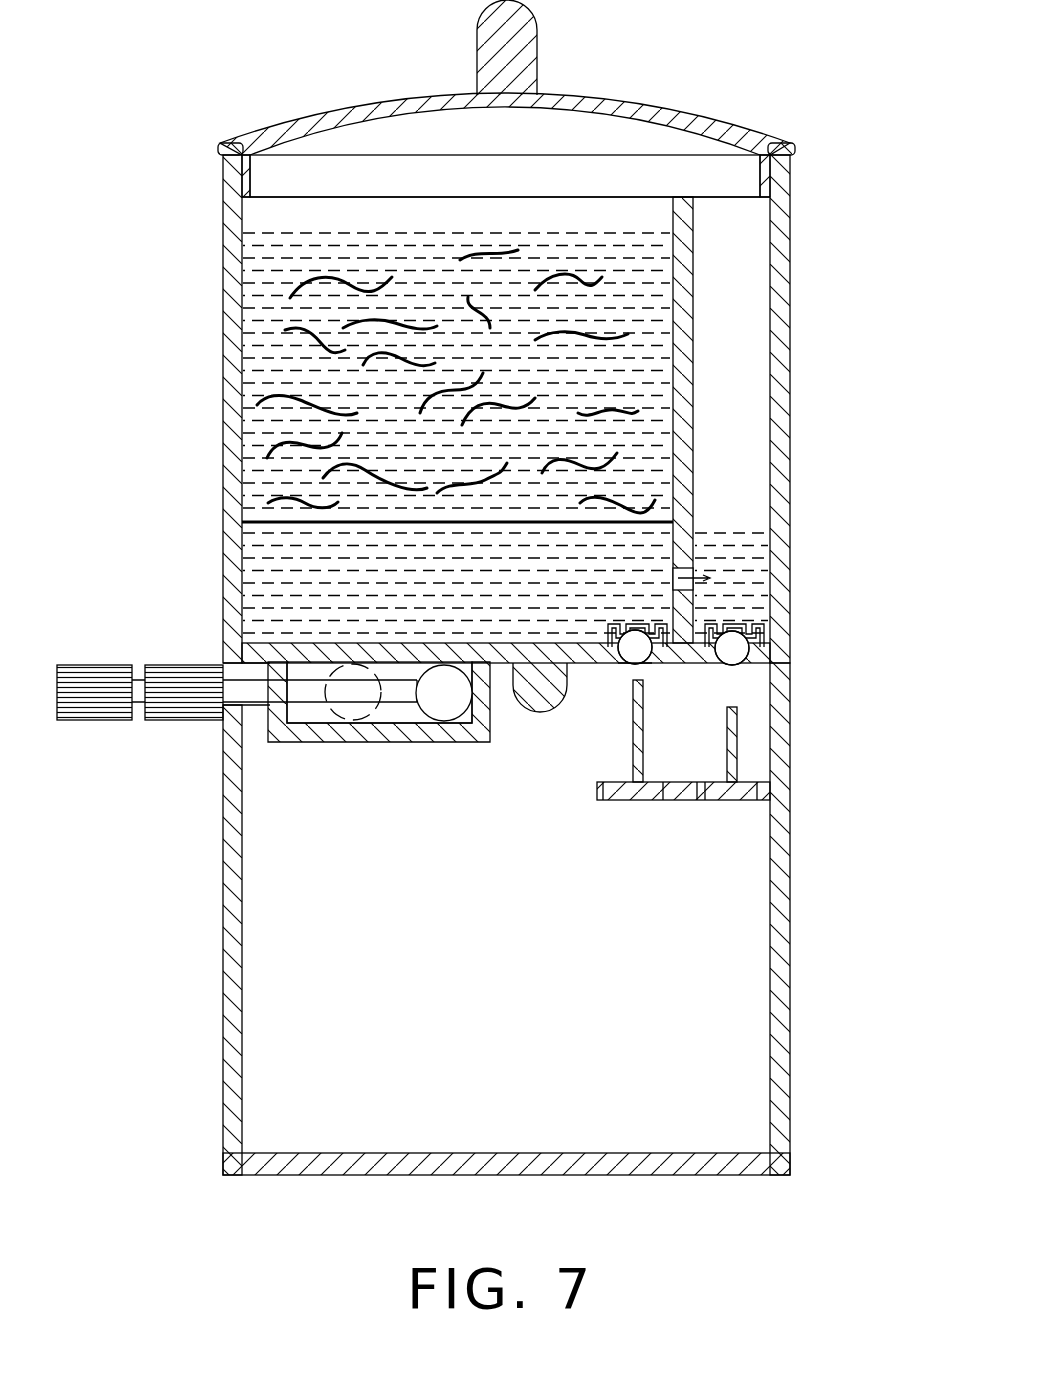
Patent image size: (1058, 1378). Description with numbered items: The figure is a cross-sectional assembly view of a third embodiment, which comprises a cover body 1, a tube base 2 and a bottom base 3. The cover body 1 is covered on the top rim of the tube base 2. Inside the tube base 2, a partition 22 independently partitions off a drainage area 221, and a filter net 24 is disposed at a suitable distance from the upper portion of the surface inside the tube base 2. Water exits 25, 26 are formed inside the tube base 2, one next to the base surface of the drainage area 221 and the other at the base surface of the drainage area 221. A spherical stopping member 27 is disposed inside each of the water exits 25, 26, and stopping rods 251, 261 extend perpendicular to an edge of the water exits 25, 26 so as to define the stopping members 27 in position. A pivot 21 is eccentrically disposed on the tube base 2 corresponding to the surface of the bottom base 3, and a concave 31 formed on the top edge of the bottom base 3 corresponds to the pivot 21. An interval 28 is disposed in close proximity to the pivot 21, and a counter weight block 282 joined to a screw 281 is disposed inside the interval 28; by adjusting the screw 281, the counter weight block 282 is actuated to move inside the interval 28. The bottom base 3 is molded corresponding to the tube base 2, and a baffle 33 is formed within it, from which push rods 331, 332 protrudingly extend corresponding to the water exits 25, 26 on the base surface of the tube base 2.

The cover body 1 is at (715, 132).
The tube base 2 is at (782, 258).
The partition 22 is at (683, 242).
The drainage area 221 is at (732, 310).
The filter net 24 is at (290, 522).
The water exit 25 is at (570, 672).
The stopping rod 251 is at (642, 653).
The water exit 26 is at (750, 655).
The stopping rod 261 is at (757, 628).
The stopping member 27 is at (747, 650).
The interval 28 is at (268, 723).
The screw 281 is at (163, 718).
The counter weight block 282 is at (413, 727).
The concave 31 is at (443, 705).
The pivot 21 is at (531, 690).
The bottom base 3 is at (783, 988).
The baffle 33 is at (727, 802).
The push rod 331 is at (738, 780).
The push rod 332 is at (680, 800).